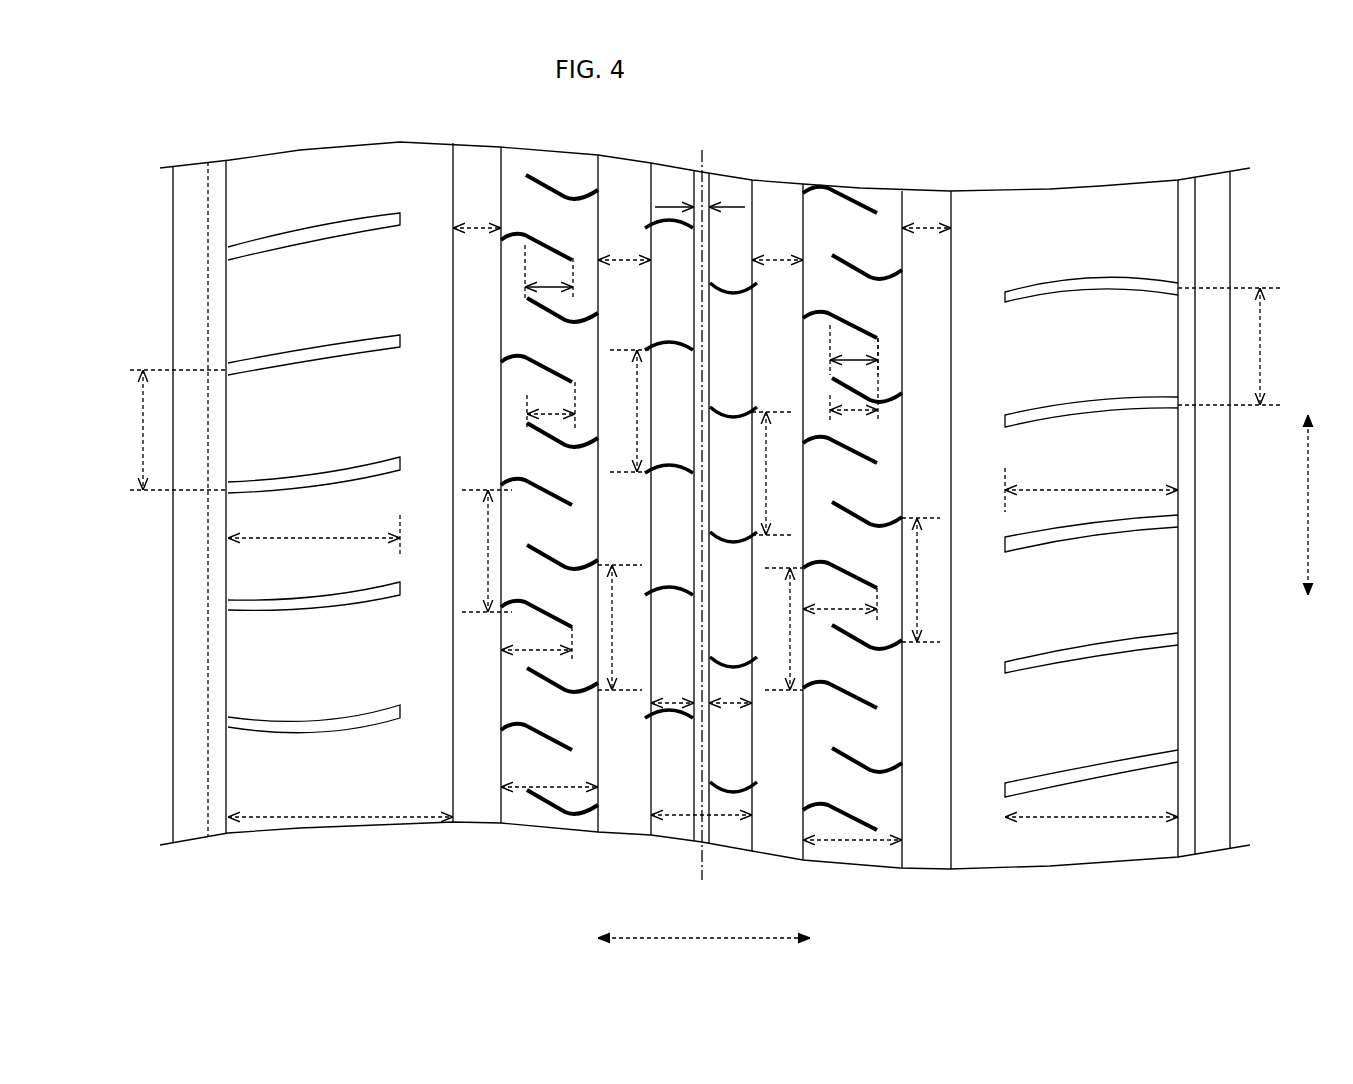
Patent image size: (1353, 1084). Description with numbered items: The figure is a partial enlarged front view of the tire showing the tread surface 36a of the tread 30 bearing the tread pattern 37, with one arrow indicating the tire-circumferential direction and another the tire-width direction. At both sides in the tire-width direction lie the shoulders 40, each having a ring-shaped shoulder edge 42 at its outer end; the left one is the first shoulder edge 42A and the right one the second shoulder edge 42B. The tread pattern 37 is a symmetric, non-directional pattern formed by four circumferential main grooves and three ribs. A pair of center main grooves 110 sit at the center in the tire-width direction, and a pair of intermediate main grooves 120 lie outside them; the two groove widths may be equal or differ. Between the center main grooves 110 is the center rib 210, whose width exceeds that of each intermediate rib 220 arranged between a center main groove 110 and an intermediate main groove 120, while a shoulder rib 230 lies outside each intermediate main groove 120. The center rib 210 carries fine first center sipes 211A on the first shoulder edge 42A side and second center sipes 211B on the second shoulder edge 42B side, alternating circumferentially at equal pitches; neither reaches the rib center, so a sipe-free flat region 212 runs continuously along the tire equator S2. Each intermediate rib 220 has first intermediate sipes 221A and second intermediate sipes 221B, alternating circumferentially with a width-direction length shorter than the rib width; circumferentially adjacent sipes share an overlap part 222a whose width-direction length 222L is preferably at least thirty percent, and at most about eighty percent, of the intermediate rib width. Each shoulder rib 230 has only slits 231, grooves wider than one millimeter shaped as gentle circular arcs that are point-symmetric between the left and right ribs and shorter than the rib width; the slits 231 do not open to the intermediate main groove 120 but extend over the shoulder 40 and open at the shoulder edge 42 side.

The tread 30 is at (258, 176).
The tread surface 36a is at (277, 170).
The tread pattern 37 is at (1152, 196).
The shoulder 40 is at (245, 575).
The shoulder edge 42 is at (108, 222).
The first shoulder edge 42A is at (226, 275).
The second shoulder edge 42B is at (1178, 258).
The center main groove 110 is at (620, 185).
The intermediate main groove 120 is at (468, 160).
The center rib 210 is at (665, 188).
The first center sipe 211A is at (660, 600).
The second center sipe 211B is at (742, 790).
The flat region 212 is at (702, 178).
The tire equator S2 is at (705, 198).
The intermediate rib 220 is at (512, 165).
The first intermediate sipe 221A is at (512, 358).
The second intermediate sipe 221B is at (540, 428).
The overlap part 222a is at (540, 250).
The tire-width direction length of overlap part 222L is at (548, 283).
The shoulder rib 230 is at (258, 765).
The slit 231 is at (268, 614).